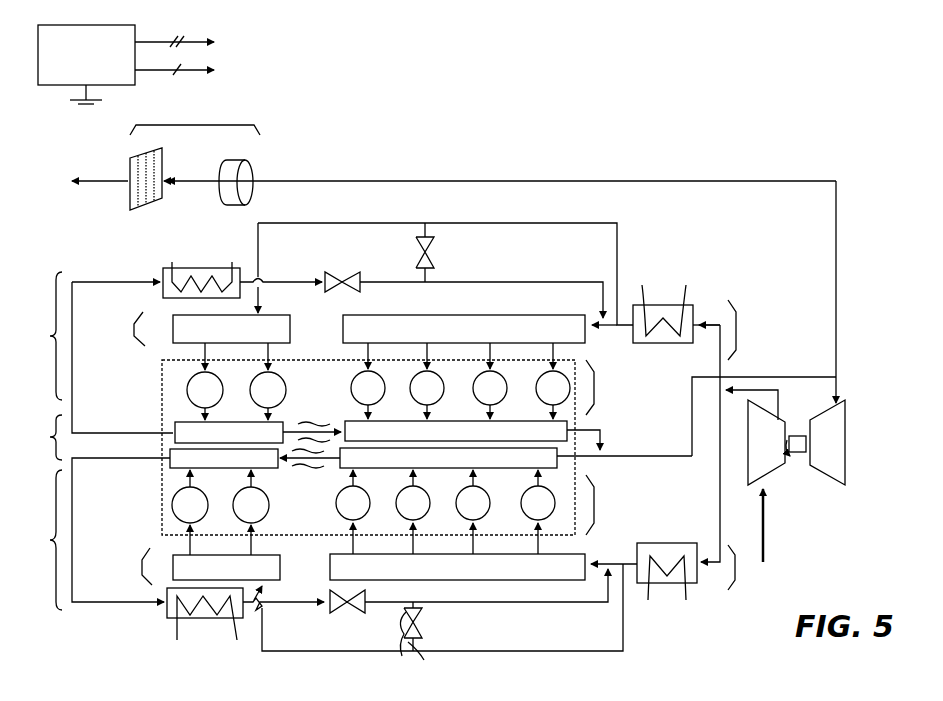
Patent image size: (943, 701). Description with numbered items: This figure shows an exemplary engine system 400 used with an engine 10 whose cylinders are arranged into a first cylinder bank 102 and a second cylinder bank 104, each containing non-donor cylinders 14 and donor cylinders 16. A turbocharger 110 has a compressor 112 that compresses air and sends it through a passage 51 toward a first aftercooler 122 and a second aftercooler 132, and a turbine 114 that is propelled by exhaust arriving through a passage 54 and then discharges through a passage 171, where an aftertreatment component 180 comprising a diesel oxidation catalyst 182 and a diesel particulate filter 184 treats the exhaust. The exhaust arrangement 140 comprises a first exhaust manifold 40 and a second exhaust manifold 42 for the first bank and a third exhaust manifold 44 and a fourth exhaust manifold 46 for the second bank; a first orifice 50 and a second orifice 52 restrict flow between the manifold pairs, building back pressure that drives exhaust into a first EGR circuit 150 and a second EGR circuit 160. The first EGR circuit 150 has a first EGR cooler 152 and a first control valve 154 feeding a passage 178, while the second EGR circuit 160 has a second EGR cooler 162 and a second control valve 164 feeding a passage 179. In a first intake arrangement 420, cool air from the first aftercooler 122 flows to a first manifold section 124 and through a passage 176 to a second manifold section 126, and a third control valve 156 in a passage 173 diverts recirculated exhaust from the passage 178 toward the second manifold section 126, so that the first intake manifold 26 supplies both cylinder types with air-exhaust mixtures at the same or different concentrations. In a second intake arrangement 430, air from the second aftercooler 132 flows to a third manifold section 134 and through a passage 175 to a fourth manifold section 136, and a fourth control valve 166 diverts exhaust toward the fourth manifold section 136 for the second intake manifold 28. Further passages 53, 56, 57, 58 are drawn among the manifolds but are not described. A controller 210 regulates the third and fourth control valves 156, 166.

The engine 10 is at (548, 210).
The non-donor cylinders 14 is at (453, 445).
The donor cylinders 16 is at (229, 447).
The first intake manifold 26 is at (134, 328).
The second intake manifold 28 is at (142, 564).
The first exhaust manifold 40 is at (456, 431).
The second exhaust manifold 42 is at (229, 432).
The third exhaust manifold 44 is at (448, 458).
The fourth exhaust manifold 46 is at (224, 458).
The first orifice 50 is at (306, 426).
The passage 51 is at (733, 392).
The second orifice 52 is at (306, 466).
The intake passage to first bank 53 is at (130, 432).
The passage 54 is at (690, 456).
The intake passage to second bank 56 is at (600, 432).
The exhaust passage from first bank 57 is at (152, 460).
The exhaust passage from second bank 58 is at (594, 460).
The first cylinder bank 102 is at (596, 388).
The second cylinder bank 104 is at (596, 505).
The turbocharger 110 is at (858, 486).
The compressor 112 is at (777, 450).
The turbine 114 is at (838, 450).
The first aftercooler 122 is at (660, 302).
The first manifold section 124 is at (474, 335).
The second manifold section 126 is at (241, 335).
The second aftercooler 132 is at (668, 583).
The third manifold section 134 is at (467, 574).
The fourth manifold section 136 is at (236, 574).
The exhaust arrangement 140 is at (41, 437).
The first EGR circuit 150 is at (96, 352).
The first EGR cooler 152 is at (199, 268).
The first control valve 154 is at (347, 272).
The third control valve 156 is at (440, 262).
The second EGR circuit 160 is at (95, 534).
The second EGR cooler 162 is at (218, 618).
The second control valve 164 is at (347, 612).
The fourth control valve 166 is at (792, 452).
The passage 171 is at (640, 181).
The passage 173 is at (422, 226).
The passage 175 is at (518, 650).
The passage 176 is at (480, 222).
The passage 178 is at (455, 281).
The passage 179 is at (447, 603).
The aftertreatment component 180 is at (207, 122).
The diesel oxidation catalyst 182 is at (240, 160).
The diesel particulate filter 184 is at (161, 150).
The controller 210 is at (97, 62).
The engine system 400 is at (494, 93).
The first intake arrangement 420 is at (740, 332).
The second intake arrangement 430 is at (737, 545).